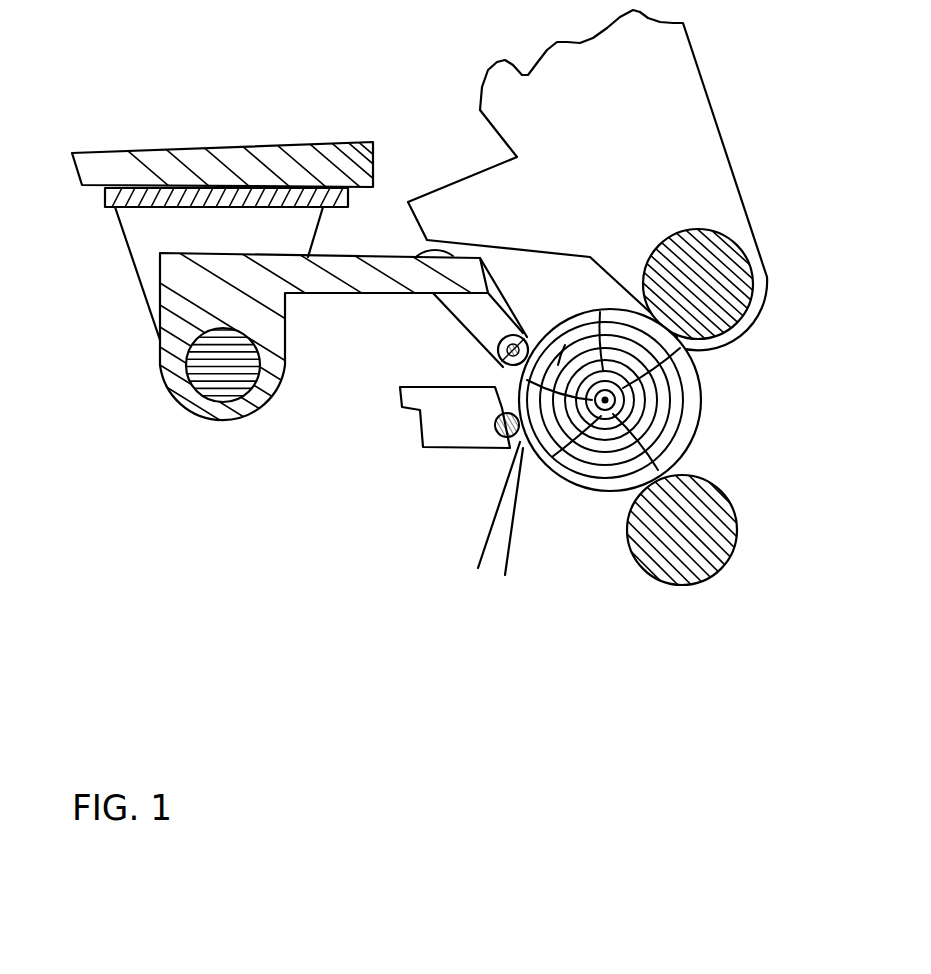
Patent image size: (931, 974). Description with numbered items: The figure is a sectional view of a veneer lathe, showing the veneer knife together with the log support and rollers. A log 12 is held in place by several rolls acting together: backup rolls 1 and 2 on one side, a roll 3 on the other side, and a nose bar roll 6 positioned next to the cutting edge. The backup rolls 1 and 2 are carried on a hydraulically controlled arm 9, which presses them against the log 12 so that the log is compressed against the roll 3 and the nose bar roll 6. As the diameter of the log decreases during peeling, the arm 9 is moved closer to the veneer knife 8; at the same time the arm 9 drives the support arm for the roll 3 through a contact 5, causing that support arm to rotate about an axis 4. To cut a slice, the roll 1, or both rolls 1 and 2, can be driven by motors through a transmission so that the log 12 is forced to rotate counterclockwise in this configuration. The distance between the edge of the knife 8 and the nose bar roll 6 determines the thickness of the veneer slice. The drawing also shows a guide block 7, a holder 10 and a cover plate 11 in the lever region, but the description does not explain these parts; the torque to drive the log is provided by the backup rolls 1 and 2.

The backup roll 1 is at (670, 237).
The backup roll 2 is at (733, 503).
The roll 3 is at (523, 331).
The axis 4 is at (163, 377).
The contact 5 is at (420, 252).
The nose bar roll 6 is at (496, 423).
The guide block 7 is at (437, 452).
The veneer knife 8 is at (513, 530).
The hydraulically controlled arm 9 is at (722, 133).
The holder 10 is at (134, 255).
The cover plate 11 is at (183, 150).
The log 12 is at (703, 397).